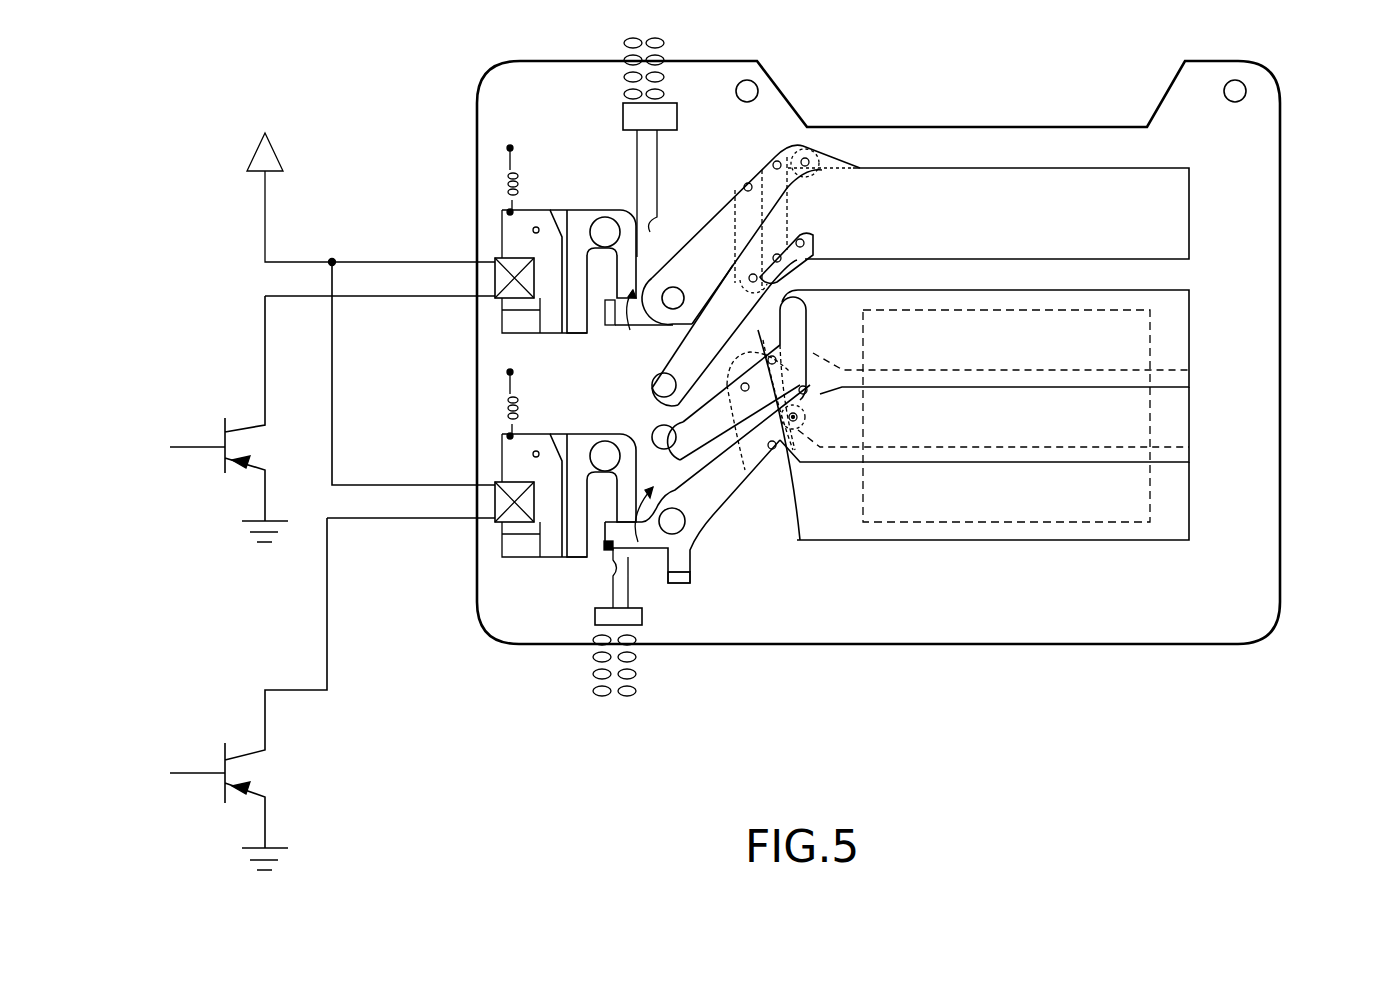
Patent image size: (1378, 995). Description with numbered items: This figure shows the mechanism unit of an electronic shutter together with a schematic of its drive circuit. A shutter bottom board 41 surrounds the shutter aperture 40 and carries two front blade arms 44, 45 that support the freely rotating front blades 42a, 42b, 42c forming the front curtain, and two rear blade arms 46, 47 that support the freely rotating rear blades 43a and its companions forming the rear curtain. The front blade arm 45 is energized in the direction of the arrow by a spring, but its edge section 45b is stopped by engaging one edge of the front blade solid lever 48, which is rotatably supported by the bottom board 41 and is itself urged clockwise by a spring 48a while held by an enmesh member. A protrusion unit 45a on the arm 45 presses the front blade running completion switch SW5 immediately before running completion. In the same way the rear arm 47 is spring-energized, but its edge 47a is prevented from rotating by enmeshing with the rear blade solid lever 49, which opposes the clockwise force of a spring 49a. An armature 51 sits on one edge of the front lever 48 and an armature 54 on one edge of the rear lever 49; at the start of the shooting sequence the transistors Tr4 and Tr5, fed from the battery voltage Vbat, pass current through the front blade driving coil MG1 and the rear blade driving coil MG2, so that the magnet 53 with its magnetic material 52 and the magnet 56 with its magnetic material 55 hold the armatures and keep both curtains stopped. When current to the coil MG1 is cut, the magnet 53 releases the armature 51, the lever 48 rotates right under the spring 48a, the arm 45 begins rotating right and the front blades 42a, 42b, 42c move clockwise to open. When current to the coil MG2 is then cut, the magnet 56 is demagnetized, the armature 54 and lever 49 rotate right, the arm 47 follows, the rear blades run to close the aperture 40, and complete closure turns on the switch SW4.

The shutter aperture 40 is at (1048, 523).
The shutter bottom board 41 is at (1270, 127).
The front blade 42a is at (1178, 330).
The front blade 42b is at (1167, 413).
The front blade 42c is at (1177, 492).
The rear blade 43a is at (987, 181).
The front blade arm 44 is at (717, 417).
The front blade arm 45 is at (710, 515).
The protrusion unit 45a is at (678, 584).
The edge section 45b is at (620, 555).
The rear blade arm 46 is at (718, 308).
The rear blade arm 47 is at (720, 215).
The edge 47a is at (607, 330).
The front blade solid lever 48 is at (608, 550).
The spring 48a is at (520, 333).
The rear blade solid lever 49 is at (575, 217).
The spring 49a is at (497, 180).
The armature 51 is at (500, 458).
The magnetic material 52 is at (500, 630).
The magnet 53 is at (500, 537).
The armature 54 is at (493, 233).
The magnetic material 55 is at (500, 338).
The magnet 56 is at (500, 312).
The front blade driving coil MG1 is at (500, 497).
The rear blade driving coil MG2 is at (497, 277).
The switch SW4 is at (622, 108).
The front blade running completion switch SW5 is at (642, 615).
The transistor Tr4 is at (332, 566).
The transistor Tr5 is at (332, 419).
The battery voltage Vbat is at (364, 185).